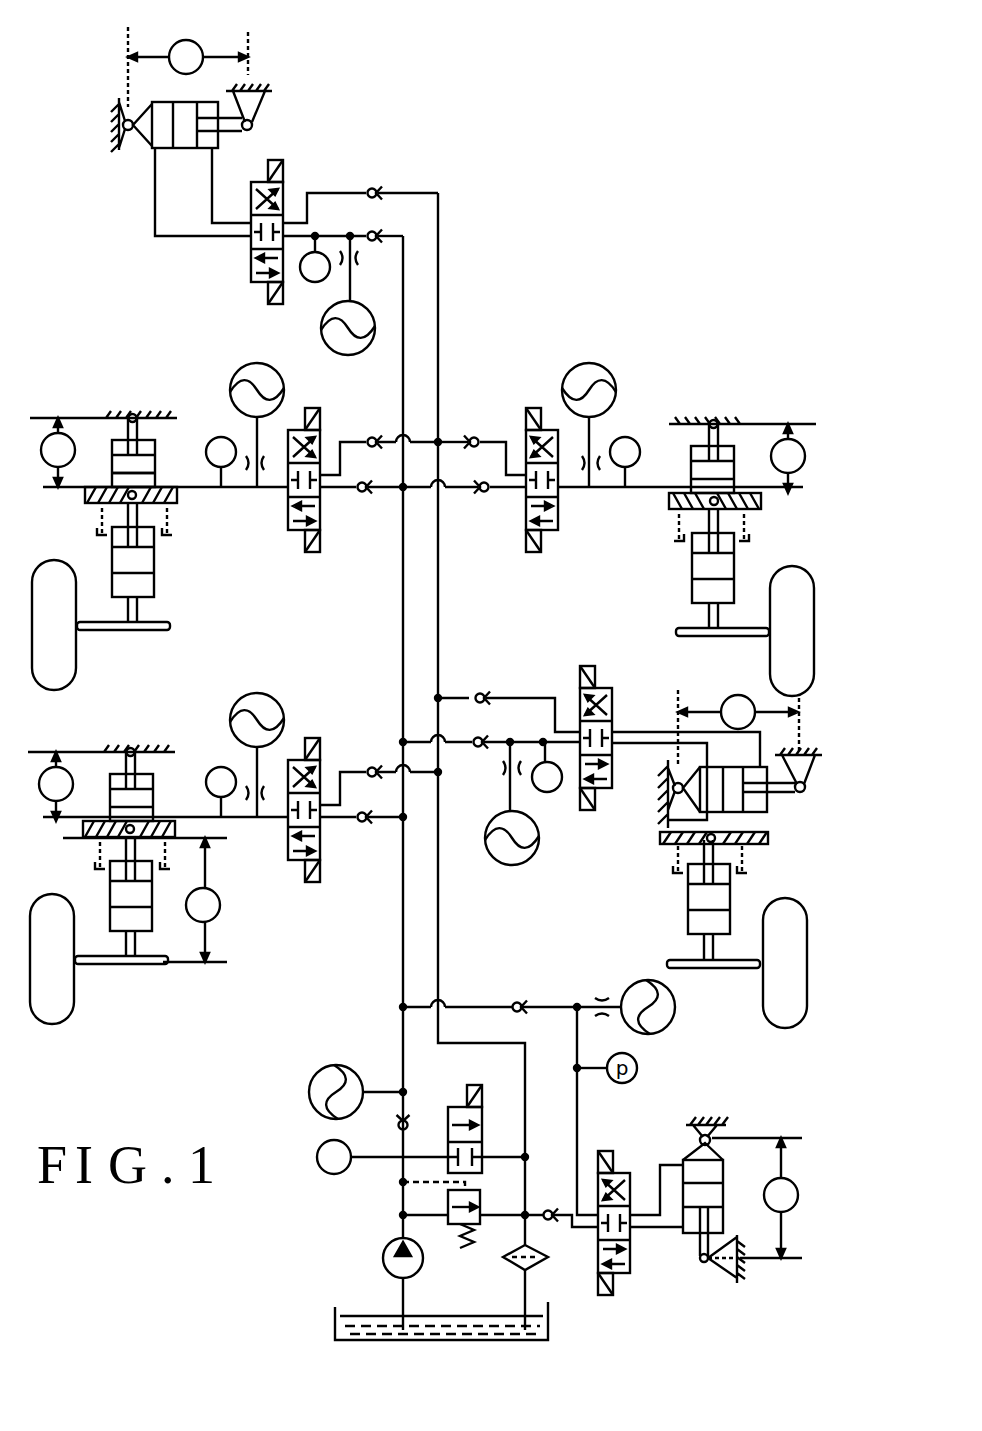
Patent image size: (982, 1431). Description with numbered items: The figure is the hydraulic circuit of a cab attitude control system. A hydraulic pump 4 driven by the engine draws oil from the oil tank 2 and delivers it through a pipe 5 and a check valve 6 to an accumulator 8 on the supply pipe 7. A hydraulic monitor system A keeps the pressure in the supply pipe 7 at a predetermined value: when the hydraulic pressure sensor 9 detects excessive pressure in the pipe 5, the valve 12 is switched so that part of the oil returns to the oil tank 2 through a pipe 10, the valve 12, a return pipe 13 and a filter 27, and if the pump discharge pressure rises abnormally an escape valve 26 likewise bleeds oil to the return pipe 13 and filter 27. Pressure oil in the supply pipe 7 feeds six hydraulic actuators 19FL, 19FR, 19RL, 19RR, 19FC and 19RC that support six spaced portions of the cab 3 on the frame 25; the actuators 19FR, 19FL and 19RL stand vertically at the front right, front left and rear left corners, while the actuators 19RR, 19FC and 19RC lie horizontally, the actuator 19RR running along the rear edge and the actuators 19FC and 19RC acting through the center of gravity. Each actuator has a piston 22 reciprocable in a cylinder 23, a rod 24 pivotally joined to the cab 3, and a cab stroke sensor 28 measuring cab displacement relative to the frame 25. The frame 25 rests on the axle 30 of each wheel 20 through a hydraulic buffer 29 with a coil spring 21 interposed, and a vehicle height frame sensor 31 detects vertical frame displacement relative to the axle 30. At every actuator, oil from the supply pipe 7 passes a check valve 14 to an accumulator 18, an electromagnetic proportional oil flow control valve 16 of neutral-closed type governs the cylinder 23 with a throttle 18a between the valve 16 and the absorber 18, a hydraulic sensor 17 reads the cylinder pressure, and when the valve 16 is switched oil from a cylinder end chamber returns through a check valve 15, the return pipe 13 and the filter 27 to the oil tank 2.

The oil tank 2 is at (446, 1318).
The cab 3 is at (149, 417).
The hydraulic pump 4 is at (382, 1256).
The pipe 5 is at (400, 1198).
The check valve 6 is at (408, 1120).
The supply pipe 7 is at (403, 912).
The accumulator 8 is at (322, 1065).
The hydraulic pressure sensor 9 is at (316, 1153).
The pipe 10 is at (448, 1155).
The valve 12 is at (455, 1088).
The pipe 13 is at (438, 920).
The check valve 14 is at (366, 232).
The check valve 15 is at (372, 188).
The oil flow control valve 16 is at (318, 436).
The hydraulic sensor 17 is at (219, 436).
The accumulator 18 is at (280, 372).
The throttle 18a is at (262, 478).
The hydraulic actuator 19FC is at (105, 96).
The hydraulic actuator 19FL is at (92, 396).
The hydraulic actuator 19FR is at (750, 408).
The hydraulic actuator 19RL is at (110, 753).
The hydraulic actuator 19RR is at (620, 832).
The hydraulic actuator 19RC is at (674, 1152).
The wheel 20 is at (46, 577).
The coil spring 21 is at (172, 528).
The piston 22 is at (155, 470).
The cylinder 23 is at (112, 480).
The rod 24 is at (140, 432).
The frame 25 is at (86, 501).
The escape valve 26 is at (480, 1208).
The filter 27 is at (515, 1267).
The cab stroke sensor 28 is at (72, 444).
The hydraulic buffer 29 is at (158, 582).
The axle 30 is at (124, 632).
The vehicle height frame sensor 31 is at (221, 905).
The hydraulic monitor system A is at (471, 1106).